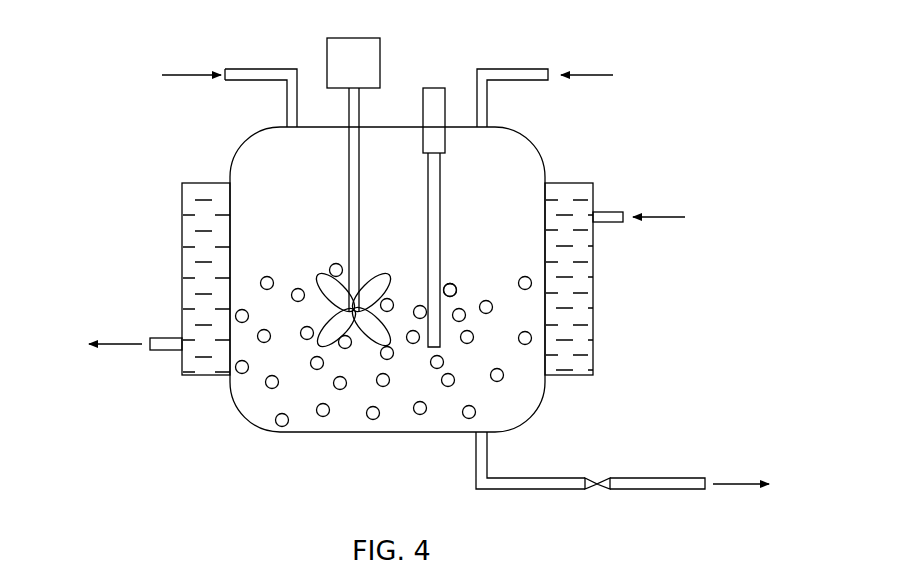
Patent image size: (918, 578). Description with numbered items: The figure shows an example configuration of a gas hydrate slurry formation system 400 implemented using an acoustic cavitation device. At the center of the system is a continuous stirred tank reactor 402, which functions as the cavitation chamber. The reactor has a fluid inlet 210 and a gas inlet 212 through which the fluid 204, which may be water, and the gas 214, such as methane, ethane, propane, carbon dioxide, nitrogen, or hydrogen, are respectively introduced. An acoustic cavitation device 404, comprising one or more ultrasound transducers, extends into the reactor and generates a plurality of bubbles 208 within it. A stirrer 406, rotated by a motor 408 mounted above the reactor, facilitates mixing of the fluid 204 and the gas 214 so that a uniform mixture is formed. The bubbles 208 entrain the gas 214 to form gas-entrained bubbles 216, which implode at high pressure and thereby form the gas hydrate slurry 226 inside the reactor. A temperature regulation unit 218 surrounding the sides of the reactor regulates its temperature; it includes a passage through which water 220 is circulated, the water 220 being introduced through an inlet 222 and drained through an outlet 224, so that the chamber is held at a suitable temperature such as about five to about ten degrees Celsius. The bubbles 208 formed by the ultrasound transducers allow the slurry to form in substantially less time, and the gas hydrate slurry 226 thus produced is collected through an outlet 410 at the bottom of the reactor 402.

The gas hydrate slurry formation system 400 is at (753, 62).
The continuous stirred tank reactor 402 is at (240, 418).
The acoustic cavitation device 404 is at (432, 88).
The stirrer 406 is at (320, 275).
The motor 408 is at (327, 62).
The outlet 410 is at (597, 480).
The fluid 204 is at (162, 75).
The bubbles 208 is at (460, 302).
The fluid inlet 210 is at (222, 73).
The gas inlet 212 is at (548, 74).
The gas 214 is at (605, 78).
The gas-entrained bubbles 216 is at (316, 371).
The temperature regulation unit 218 is at (181, 236).
The water 220 is at (572, 332).
The inlet 222 is at (623, 217).
The outlet 224 is at (160, 350).
The gas hydrate slurry 226 is at (349, 396).